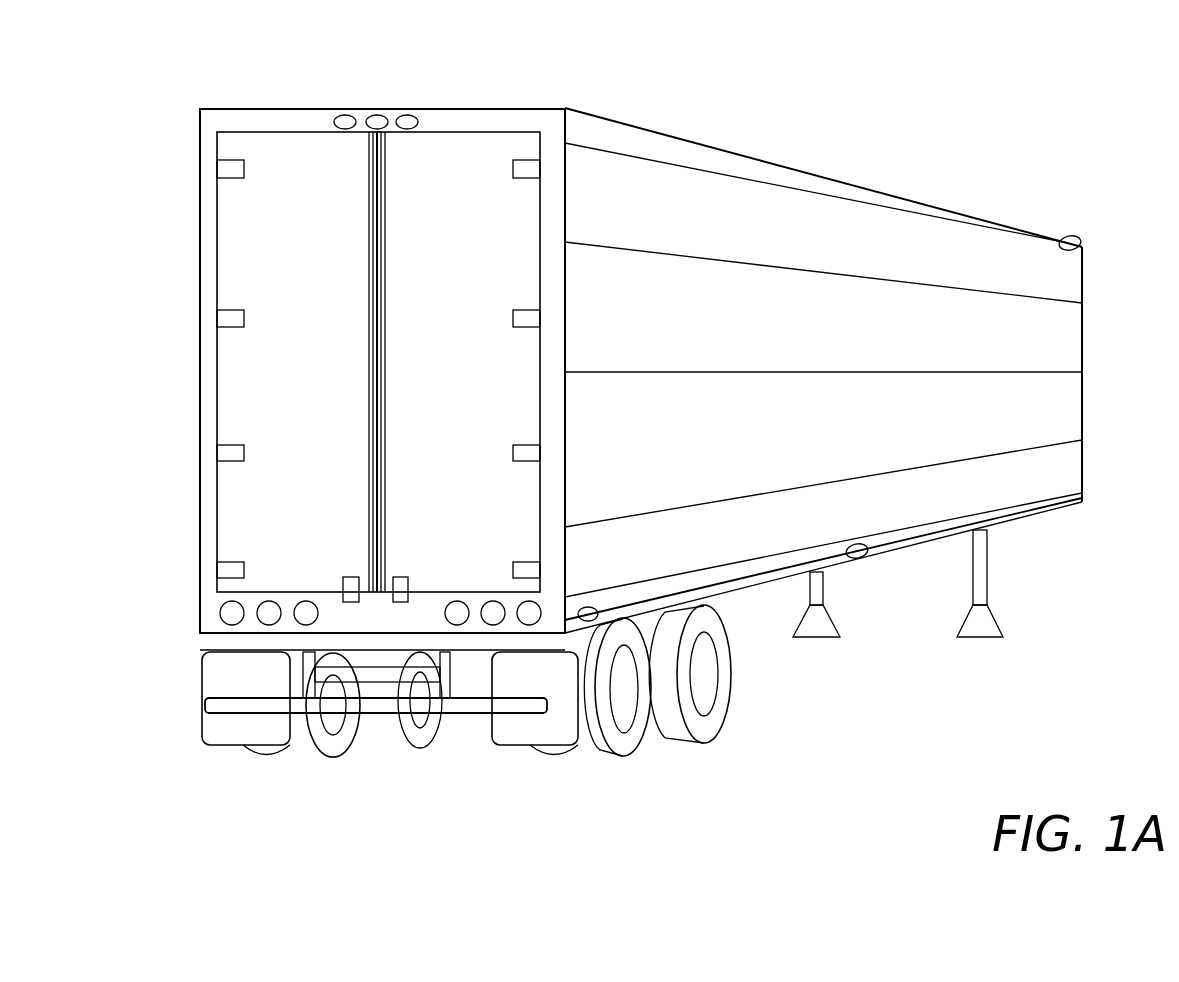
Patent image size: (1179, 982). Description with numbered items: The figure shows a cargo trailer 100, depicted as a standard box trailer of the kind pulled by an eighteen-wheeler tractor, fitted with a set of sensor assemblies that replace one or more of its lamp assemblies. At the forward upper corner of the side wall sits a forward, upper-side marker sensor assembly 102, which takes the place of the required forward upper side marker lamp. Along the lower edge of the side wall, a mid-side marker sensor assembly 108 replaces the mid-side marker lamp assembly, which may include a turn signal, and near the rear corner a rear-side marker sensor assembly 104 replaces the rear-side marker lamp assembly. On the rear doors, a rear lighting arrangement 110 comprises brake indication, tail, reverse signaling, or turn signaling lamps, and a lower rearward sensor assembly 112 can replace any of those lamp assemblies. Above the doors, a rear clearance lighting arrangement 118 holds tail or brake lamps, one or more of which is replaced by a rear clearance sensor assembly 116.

The cargo trailer 100 is at (641, 432).
The forward, upper-side marker sensor assembly 102 is at (1082, 243).
The rear-side marker sensor assembly 104 is at (597, 619).
The mid-side marker sensor assembly 108 is at (862, 556).
The rear lighting arrangement 110 is at (202, 614).
The lower rearward sensor assembly 112 is at (303, 612).
The rear clearance sensor assembly 116 is at (378, 123).
The rear clearance lighting arrangement 118 is at (417, 81).